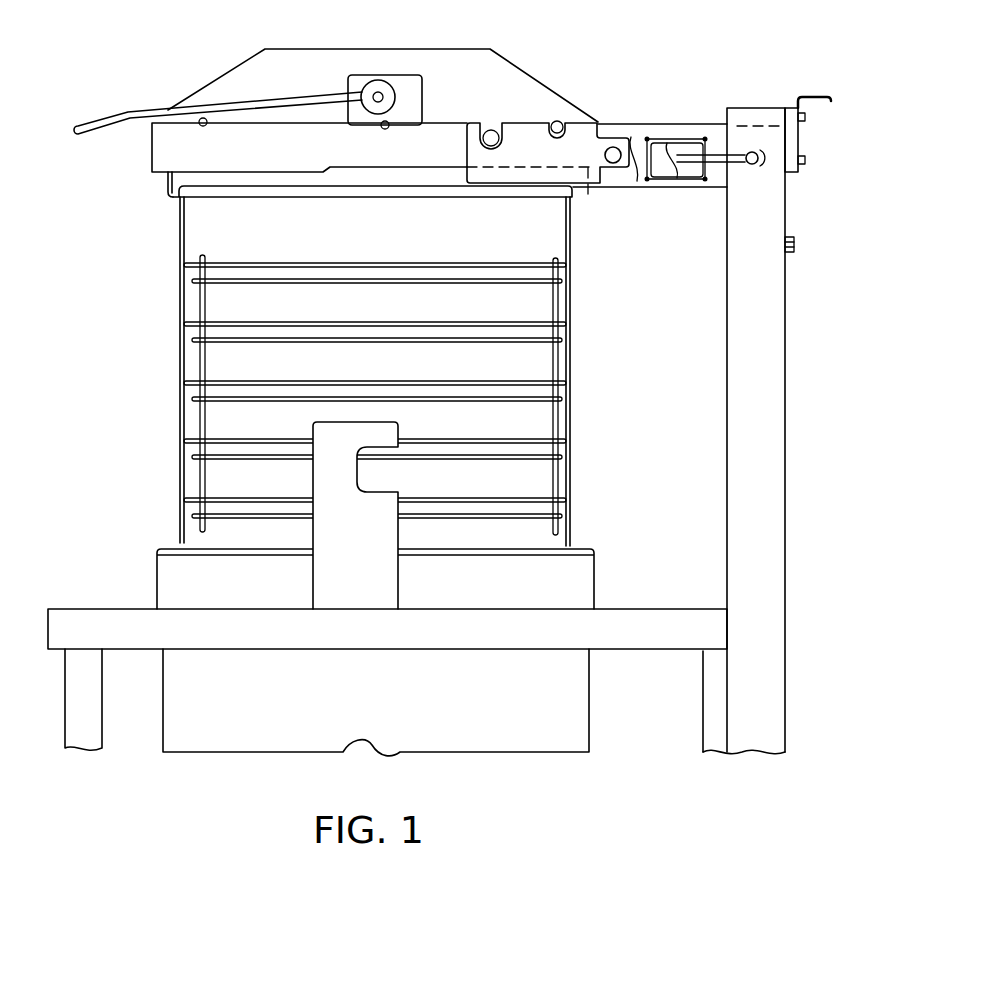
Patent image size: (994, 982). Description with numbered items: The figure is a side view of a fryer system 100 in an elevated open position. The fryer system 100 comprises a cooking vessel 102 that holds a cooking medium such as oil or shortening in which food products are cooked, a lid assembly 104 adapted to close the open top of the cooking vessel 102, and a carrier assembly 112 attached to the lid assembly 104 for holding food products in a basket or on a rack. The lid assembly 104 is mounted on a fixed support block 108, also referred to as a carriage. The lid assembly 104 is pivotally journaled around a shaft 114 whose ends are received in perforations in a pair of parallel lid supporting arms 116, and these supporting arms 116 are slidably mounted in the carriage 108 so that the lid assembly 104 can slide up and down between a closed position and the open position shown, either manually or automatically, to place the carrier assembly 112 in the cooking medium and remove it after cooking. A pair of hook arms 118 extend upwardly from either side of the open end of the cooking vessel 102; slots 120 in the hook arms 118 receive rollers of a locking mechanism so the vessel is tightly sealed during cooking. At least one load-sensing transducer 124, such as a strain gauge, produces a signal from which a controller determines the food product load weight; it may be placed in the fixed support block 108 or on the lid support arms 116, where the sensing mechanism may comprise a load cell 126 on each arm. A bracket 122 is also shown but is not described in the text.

The fryer system 100 is at (790, 357).
The cooking vessel 102 is at (589, 715).
The lid assembly 104 is at (218, 75).
The fixed support block 108 is at (788, 220).
The carrier assembly 112 is at (180, 312).
The shaft 114 is at (615, 165).
The lid supporting arms 116 is at (608, 127).
The hook arms 118 is at (387, 575).
The slots 120 is at (382, 478).
The hanger bracket 122 is at (170, 193).
The load-sensing transducer 124 is at (683, 135).
The load cell 126 is at (690, 148).